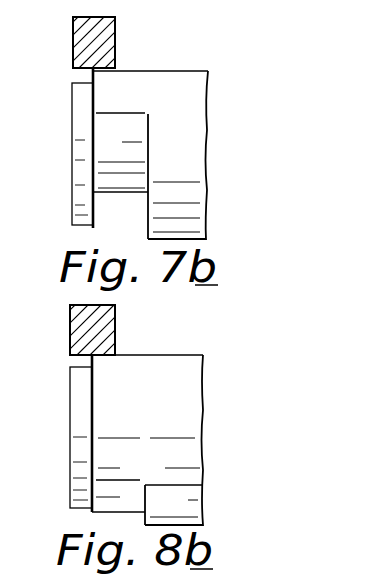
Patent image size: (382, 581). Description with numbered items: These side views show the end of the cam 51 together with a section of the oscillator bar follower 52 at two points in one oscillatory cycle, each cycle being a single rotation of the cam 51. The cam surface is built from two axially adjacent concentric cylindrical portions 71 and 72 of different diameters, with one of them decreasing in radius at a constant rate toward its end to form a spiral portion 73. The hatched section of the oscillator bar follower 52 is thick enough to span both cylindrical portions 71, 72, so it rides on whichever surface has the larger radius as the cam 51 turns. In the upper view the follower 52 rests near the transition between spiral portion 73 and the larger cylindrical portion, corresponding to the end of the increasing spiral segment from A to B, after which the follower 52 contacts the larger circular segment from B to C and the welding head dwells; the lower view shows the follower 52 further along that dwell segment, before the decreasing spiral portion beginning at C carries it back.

In FIG. 7B, the oscillator bar follower 52 is at (106, 36).
In FIG. 8B, the oscillator bar follower 52 is at (80, 322).
In FIG. 7B, the cylindrical portion 71 is at (125, 80).
In FIG. 8B, the cylindrical portion 71 is at (108, 414).
In FIG. 7B, the spiral portion 73 is at (120, 151).
In FIG. 8B, the spiral portion 73 is at (120, 497).
In FIG. 7B, the cam 51 is at (199, 156).
In FIG. 8B, the cam 51 is at (189, 412).
In FIG. 7B, the cylindrical portion 72 is at (80, 226).
In FIG. 8B, the cylindrical portion 72 is at (76, 510).
In FIG. 7B, the point A of cam contour A is at (113, 196).
In FIG. 7B, the point B of cam contour B is at (137, 112).
In FIG. 8B, the point B of cam contour B is at (121, 480).
In FIG. 8B, the point C of cam contour C is at (123, 355).